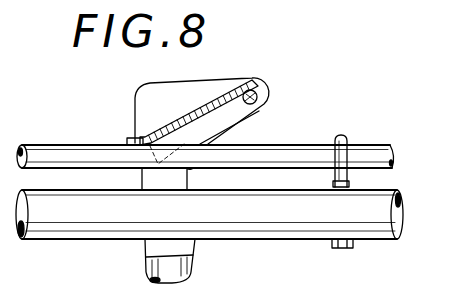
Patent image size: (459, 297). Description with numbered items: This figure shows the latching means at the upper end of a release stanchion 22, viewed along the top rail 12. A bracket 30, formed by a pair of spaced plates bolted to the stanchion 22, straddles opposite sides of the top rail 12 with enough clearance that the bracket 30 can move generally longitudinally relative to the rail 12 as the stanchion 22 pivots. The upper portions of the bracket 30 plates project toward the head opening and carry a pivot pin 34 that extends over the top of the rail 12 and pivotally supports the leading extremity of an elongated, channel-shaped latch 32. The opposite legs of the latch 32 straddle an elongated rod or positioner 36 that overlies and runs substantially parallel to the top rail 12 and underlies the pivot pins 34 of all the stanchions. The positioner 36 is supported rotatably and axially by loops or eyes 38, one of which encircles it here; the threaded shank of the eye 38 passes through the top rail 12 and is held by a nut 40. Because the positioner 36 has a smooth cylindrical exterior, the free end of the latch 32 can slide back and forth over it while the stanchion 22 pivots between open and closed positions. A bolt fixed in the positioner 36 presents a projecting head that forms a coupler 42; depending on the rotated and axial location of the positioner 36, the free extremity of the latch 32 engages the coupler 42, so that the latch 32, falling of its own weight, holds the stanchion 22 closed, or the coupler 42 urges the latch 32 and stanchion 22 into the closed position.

The top rail 12 is at (299, 230).
The release stanchion 22 is at (193, 261).
The bracket 30 is at (136, 103).
The latch 32 is at (209, 103).
The pivot pin 34 is at (251, 101).
The positioner 36 is at (283, 146).
The eye 38 is at (340, 135).
The nut 40 is at (353, 244).
The coupler 42 is at (128, 143).